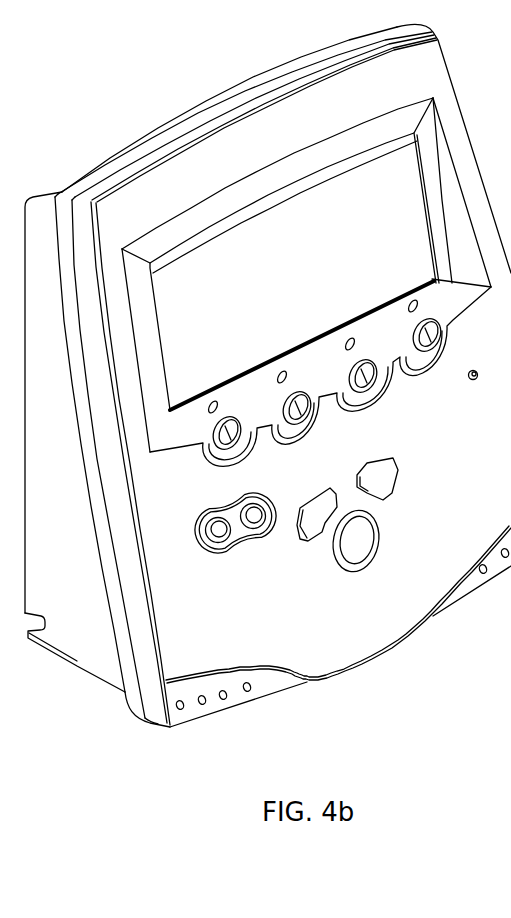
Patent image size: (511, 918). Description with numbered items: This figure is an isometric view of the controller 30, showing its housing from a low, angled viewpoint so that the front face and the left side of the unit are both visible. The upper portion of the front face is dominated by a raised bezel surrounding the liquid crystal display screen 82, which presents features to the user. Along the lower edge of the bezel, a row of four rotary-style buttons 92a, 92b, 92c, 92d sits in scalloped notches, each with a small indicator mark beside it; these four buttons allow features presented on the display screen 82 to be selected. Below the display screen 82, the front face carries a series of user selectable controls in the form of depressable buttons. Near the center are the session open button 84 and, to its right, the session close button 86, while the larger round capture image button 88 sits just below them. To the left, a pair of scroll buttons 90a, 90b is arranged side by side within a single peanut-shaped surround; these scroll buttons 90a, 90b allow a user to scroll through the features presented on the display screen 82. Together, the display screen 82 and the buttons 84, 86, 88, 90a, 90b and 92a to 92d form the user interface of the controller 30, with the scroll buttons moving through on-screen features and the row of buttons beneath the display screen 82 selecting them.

The controller 30 is at (140, 119).
The liquid crystal display screen 82 is at (300, 268).
The session open button 84 is at (317, 515).
The session close button 86 is at (383, 482).
The capture image button 88 is at (360, 542).
The scroll button 90a is at (217, 530).
The scroll button 90b is at (253, 517).
The button 92a is at (226, 419).
The button 92b is at (297, 394).
The button 92c is at (360, 361).
The button 92d is at (407, 297).